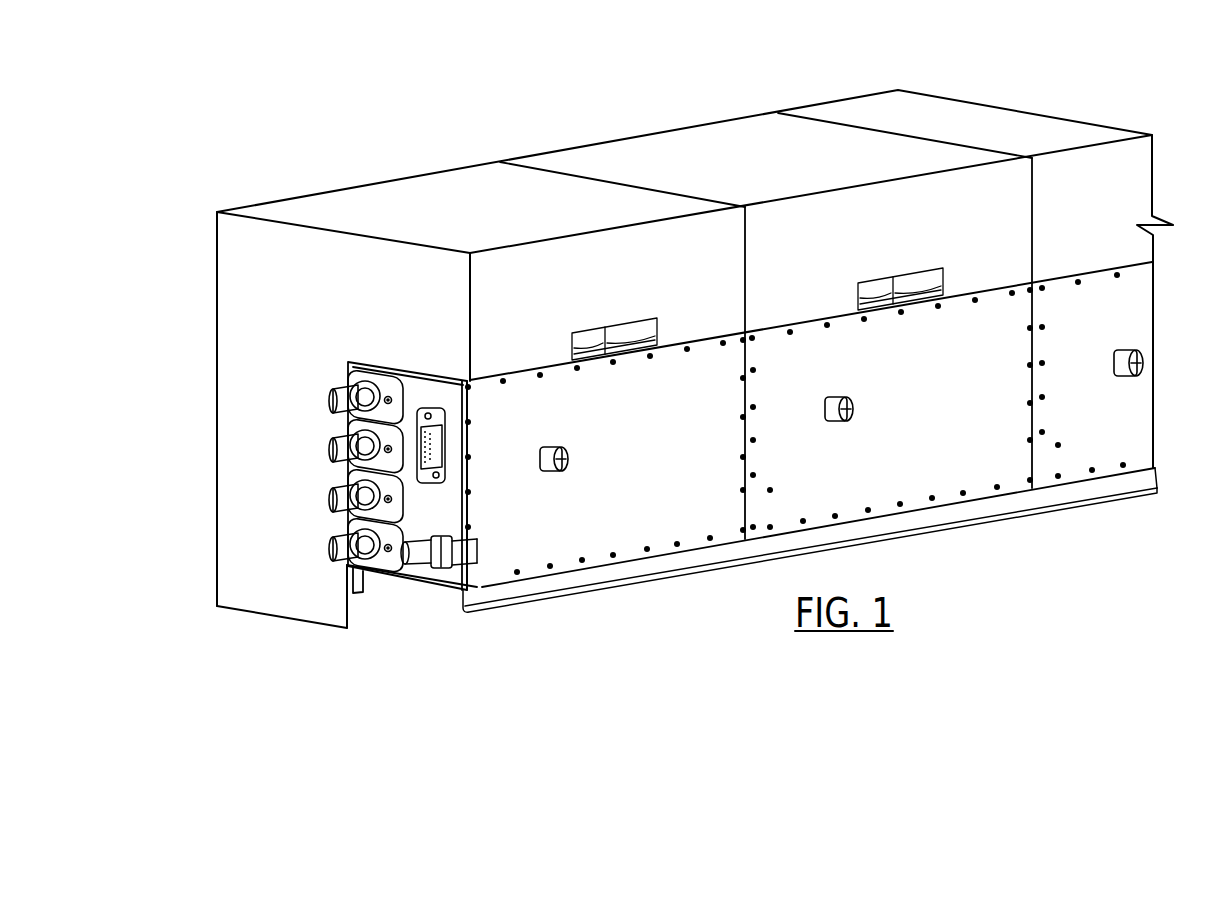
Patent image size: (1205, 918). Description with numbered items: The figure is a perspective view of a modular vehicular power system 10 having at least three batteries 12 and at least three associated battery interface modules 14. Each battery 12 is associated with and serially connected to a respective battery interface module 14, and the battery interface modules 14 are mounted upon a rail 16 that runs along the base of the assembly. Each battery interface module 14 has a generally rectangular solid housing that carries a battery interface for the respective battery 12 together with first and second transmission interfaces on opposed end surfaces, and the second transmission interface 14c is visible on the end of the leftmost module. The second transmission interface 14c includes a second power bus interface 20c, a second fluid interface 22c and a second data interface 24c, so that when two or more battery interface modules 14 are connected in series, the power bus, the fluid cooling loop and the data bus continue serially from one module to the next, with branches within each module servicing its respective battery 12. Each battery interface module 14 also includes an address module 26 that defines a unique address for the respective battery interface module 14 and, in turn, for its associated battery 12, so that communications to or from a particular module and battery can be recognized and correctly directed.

The vehicular power system 10 is at (643, 105).
The battery 12 is at (489, 222).
The battery interface module 14 is at (808, 452).
The second transmission interface 14c is at (467, 523).
The rail 16 is at (490, 593).
The second power bus interface 20c is at (324, 457).
The second fluid interface 22c is at (447, 572).
The second data interface 24c is at (439, 409).
The address module 26 is at (861, 432).